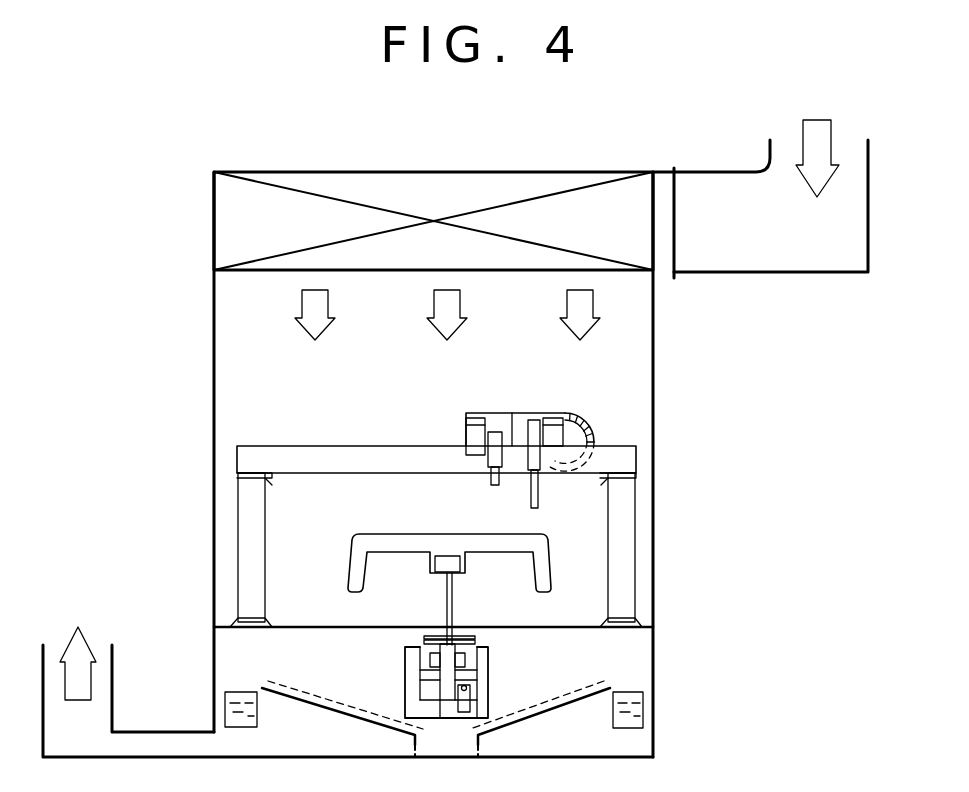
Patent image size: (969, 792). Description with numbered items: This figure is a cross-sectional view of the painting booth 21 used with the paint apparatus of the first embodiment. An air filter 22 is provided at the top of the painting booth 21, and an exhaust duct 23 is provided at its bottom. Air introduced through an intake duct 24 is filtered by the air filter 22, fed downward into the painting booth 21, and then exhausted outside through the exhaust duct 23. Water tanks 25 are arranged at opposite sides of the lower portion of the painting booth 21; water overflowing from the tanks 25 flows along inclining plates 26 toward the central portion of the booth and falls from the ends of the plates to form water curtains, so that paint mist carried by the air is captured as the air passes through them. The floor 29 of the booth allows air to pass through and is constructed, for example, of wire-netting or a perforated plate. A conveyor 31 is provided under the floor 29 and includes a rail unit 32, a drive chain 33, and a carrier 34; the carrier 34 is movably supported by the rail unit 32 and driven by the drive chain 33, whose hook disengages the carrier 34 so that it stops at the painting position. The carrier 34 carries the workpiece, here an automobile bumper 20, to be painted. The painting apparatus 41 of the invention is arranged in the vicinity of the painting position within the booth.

The automobile bumper 20 is at (380, 535).
The painting booth 21 is at (214, 414).
The air filter 22 is at (417, 182).
The exhaust duct 23 is at (112, 690).
The intake duct 24 is at (734, 275).
The water tanks 25 is at (236, 692).
The inclining plates 26 is at (326, 708).
The floor 29 is at (337, 623).
The conveyor 31 is at (405, 663).
The rail unit 32 is at (412, 703).
The drive chain 33 is at (470, 690).
The carrier 34 is at (478, 655).
The painting apparatus 41 is at (490, 413).